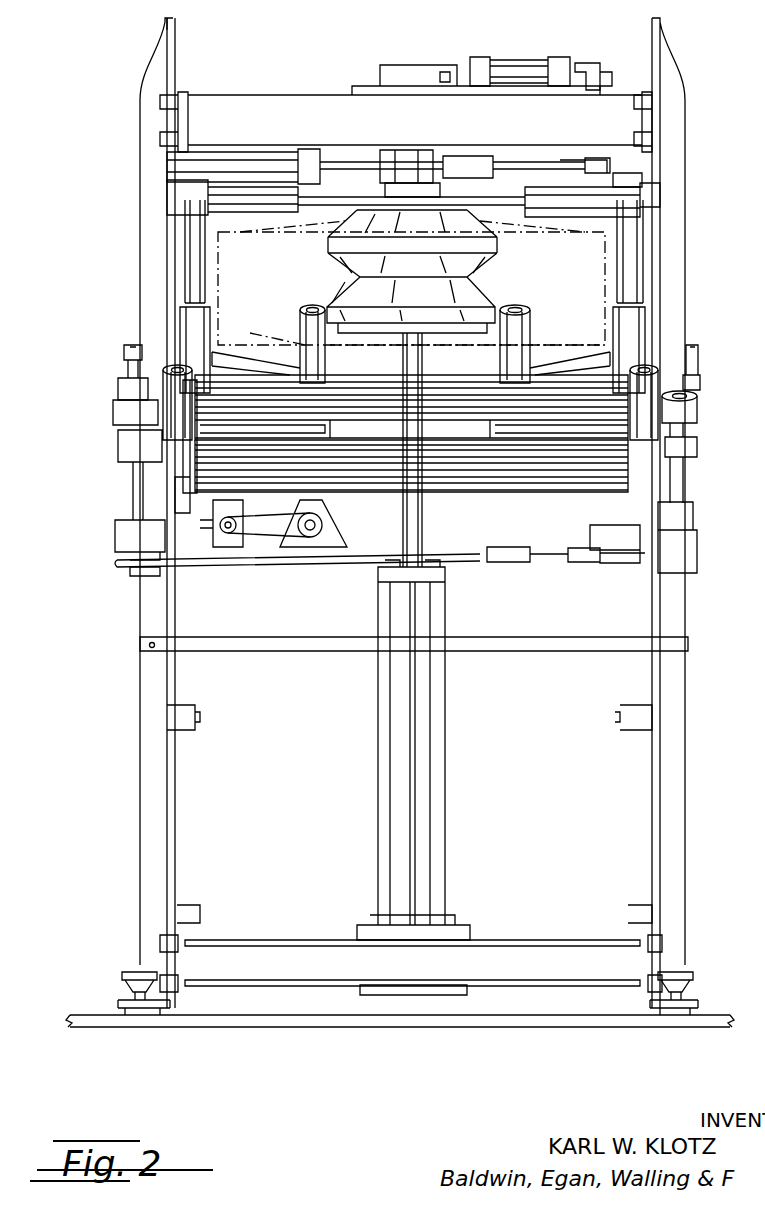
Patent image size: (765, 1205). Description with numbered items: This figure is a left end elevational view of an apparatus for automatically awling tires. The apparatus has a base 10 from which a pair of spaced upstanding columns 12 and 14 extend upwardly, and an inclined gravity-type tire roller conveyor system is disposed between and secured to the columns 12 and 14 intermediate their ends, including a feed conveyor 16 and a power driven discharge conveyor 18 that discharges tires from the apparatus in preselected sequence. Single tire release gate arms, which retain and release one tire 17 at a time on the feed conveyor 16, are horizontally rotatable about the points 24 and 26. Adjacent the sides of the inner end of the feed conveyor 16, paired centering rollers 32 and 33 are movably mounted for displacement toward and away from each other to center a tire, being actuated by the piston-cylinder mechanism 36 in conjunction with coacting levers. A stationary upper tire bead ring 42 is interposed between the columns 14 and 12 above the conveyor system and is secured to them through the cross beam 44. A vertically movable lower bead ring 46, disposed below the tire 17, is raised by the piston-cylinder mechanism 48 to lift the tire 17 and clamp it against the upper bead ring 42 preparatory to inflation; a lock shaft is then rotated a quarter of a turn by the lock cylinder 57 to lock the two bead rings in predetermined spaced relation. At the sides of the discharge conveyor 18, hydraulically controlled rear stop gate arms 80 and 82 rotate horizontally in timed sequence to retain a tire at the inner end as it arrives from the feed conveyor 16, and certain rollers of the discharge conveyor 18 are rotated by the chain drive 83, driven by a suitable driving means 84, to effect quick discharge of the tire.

The base 10 is at (270, 975).
The column 12 is at (150, 604).
The column 14 is at (680, 595).
The feed conveyor 16 is at (590, 395).
The tire 17 is at (218, 243).
The power driven discharge conveyor 18 is at (605, 458).
The point 24 is at (698, 362).
The point 26 is at (124, 362).
The centering roller 32 is at (185, 320).
The centering roller 33 is at (625, 337).
The piston-cylinder mechanism 36 is at (258, 161).
The stationary upper tire bead ring 42 is at (492, 268).
The cross beam 44 is at (238, 96).
The lower bead ring 46 is at (330, 293).
The piston-cylinder mechanism 48 is at (425, 720).
The lock cylinder 57 is at (530, 60).
The rear stop gate arm 80 is at (680, 420).
The rear stop gate arm 82 is at (150, 405).
The chain drive 83 is at (200, 448).
The driving means 84 is at (334, 516).